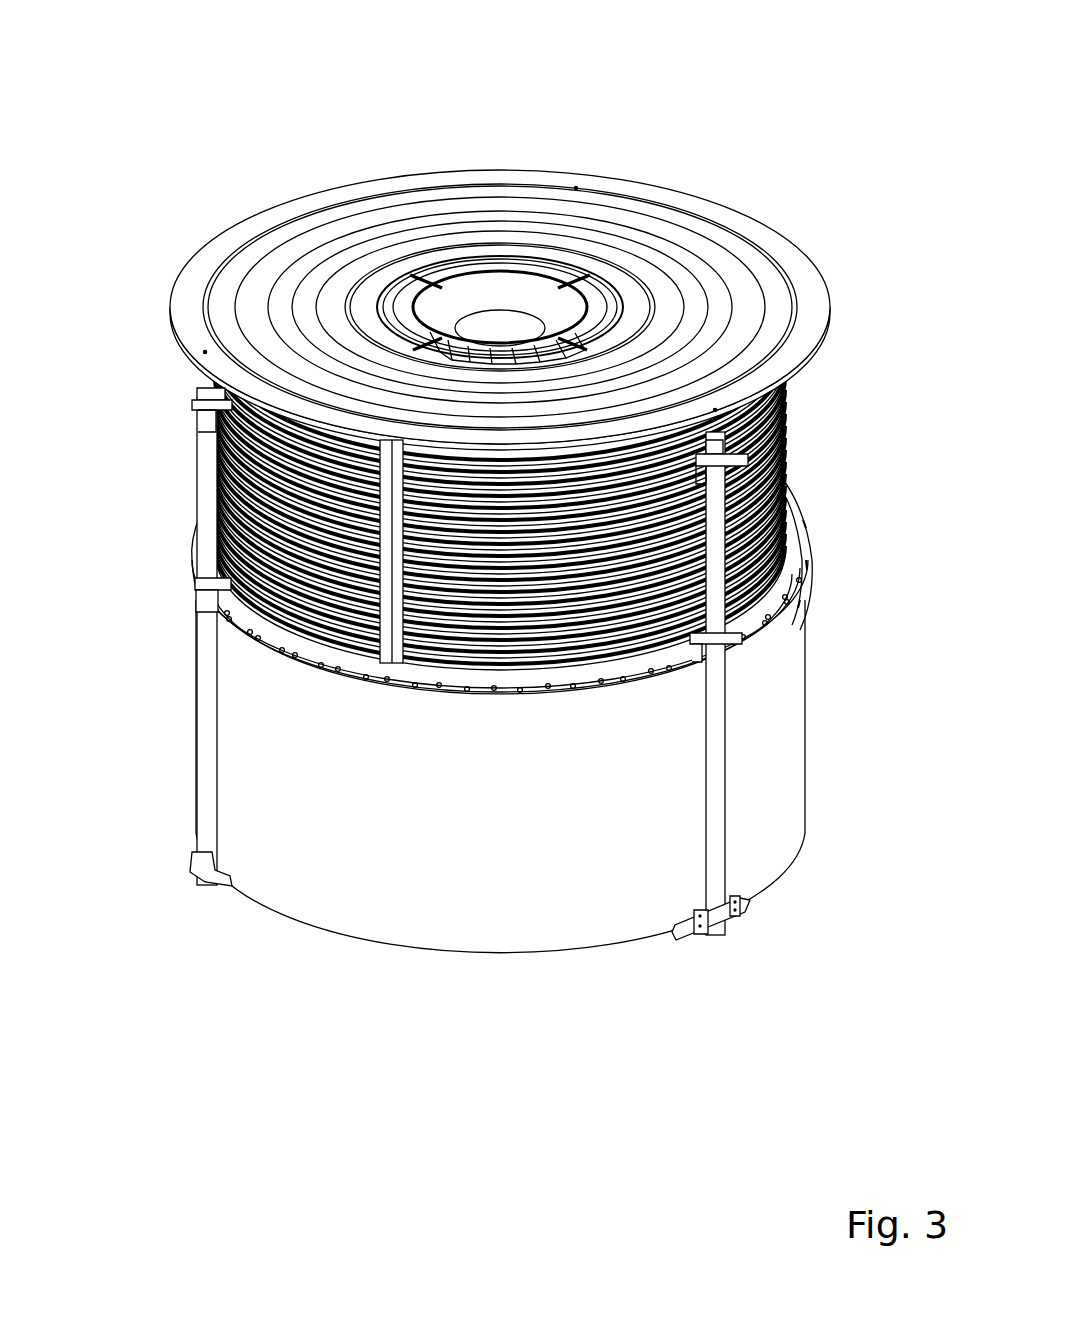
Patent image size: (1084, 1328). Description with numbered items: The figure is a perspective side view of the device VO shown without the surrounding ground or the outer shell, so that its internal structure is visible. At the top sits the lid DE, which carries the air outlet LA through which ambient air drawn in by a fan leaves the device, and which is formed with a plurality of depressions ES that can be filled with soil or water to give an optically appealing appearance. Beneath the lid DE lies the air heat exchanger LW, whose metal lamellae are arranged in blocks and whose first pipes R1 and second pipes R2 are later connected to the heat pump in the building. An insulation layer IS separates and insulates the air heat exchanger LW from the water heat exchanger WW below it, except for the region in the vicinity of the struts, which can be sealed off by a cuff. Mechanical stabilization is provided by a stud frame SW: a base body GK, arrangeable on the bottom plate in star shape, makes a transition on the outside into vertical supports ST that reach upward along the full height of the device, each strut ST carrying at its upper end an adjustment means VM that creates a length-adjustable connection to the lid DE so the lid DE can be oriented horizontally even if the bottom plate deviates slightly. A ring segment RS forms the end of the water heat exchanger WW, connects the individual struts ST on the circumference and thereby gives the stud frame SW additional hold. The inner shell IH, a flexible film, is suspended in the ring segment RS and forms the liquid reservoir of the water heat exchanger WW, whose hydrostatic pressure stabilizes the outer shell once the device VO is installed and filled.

The device VO is at (370, 130).
The air outlet LA is at (598, 323).
The depressions ES is at (723, 323).
The lid DE is at (790, 390).
The first pipes R1 is at (785, 420).
The adjustment means VM is at (200, 400).
The insulation layer IS is at (787, 490).
The second pipes R2 is at (800, 555).
The air heat exchanger LW is at (172, 448).
The water heat exchanger WW is at (218, 610).
The vertical support ST is at (207, 722).
The base body GK is at (195, 878).
The inner shell IH is at (773, 747).
The ring segment RS is at (605, 683).
The stud frame SW is at (665, 1138).